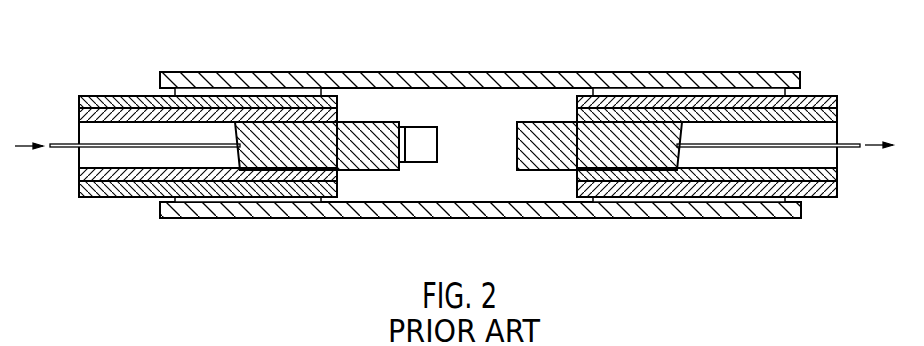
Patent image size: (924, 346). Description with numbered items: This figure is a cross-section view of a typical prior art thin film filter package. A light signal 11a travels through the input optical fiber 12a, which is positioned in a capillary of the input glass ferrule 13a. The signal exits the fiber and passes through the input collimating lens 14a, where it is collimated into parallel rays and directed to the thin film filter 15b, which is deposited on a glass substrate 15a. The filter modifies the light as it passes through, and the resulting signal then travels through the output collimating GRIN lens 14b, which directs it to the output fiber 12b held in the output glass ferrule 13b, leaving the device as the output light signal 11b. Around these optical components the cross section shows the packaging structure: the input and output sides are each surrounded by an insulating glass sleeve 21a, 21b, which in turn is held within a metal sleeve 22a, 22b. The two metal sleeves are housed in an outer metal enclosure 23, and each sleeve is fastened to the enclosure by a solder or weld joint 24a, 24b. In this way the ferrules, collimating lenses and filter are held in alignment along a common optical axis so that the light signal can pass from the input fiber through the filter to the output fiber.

The light signal 11a is at (22, 150).
The light signal 11b is at (877, 148).
The optical fiber 12a is at (68, 133).
The output fiber 12b is at (845, 133).
The input glass ferrule 13a is at (131, 176).
The glass ferrule 13b is at (716, 176).
The input collimating lens 14a is at (368, 170).
The output collimating GRIN lens 14b is at (533, 170).
The glass substrate 15a is at (427, 127).
The thin film filter 15b is at (402, 127).
The insulating glass sleeve 21a is at (107, 110).
The insulating glass sleeve 21b is at (737, 113).
The metal sleeve 22a is at (137, 97).
The metal sleeve 22b is at (807, 97).
The outer metal enclosure 23 is at (265, 72).
The solder or weld joint 24a is at (197, 88).
The solder or weld joint 24b is at (695, 90).